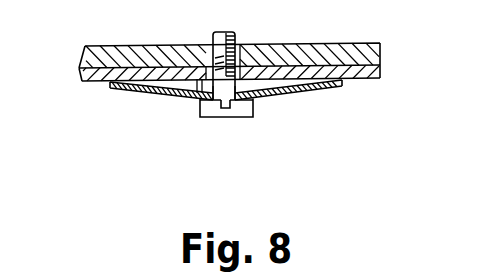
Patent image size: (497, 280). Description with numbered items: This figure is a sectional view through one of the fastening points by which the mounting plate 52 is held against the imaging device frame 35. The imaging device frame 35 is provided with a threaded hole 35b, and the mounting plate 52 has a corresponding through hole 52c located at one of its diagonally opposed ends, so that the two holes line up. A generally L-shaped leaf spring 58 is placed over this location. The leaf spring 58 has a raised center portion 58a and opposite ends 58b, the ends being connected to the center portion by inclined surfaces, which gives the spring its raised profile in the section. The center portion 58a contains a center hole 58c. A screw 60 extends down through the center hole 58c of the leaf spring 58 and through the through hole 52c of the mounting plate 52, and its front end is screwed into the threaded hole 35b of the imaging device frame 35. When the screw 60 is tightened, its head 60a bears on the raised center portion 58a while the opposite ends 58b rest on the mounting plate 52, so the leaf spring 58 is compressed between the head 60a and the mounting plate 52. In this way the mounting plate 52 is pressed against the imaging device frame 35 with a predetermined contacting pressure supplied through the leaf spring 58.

The imaging device frame 35 is at (312, 45).
The threaded hole 35b is at (233, 33).
The mounting plate 52 is at (380, 72).
The through hole 52c is at (190, 94).
The leaf spring 58 is at (147, 67).
The raised center portion 58a is at (203, 116).
The opposite end 58b is at (110, 84).
The center hole 58c is at (231, 110).
The screw 60 is at (213, 34).
The head of the screw 60a is at (256, 110).